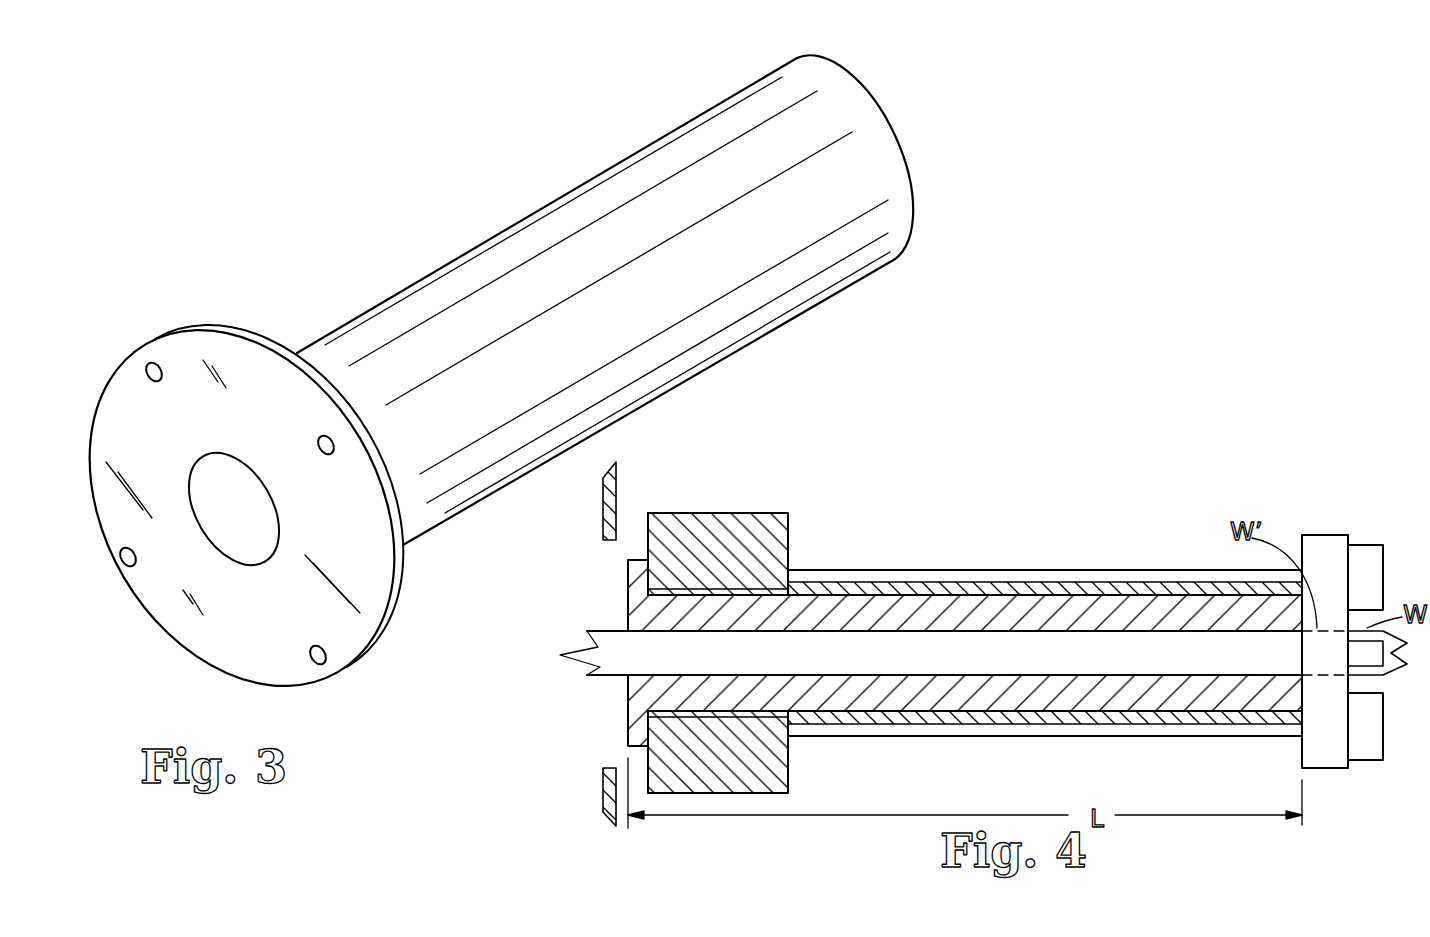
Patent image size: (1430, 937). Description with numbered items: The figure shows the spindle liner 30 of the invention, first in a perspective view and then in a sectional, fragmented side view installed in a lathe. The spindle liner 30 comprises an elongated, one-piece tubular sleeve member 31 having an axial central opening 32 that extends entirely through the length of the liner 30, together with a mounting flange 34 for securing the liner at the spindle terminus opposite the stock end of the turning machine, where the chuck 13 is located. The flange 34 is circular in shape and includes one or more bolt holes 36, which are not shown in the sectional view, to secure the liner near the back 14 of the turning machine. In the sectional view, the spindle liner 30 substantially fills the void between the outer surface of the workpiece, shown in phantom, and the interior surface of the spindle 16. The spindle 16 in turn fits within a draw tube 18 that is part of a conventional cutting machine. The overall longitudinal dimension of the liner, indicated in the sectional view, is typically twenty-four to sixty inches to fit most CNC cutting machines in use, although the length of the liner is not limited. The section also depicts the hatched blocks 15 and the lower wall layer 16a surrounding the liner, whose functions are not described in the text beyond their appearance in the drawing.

In FIG. 4, the chuck 13 is at (1325, 768).
In FIG. 4, the back of the turning machine 14 is at (618, 497).
In FIG. 4, the clamp block 15 is at (688, 513).
In FIG. 4, the spindle 16 is at (1007, 580).
In FIG. 4, the inner liner layer 16a is at (900, 703).
In FIG. 4, the draw tube 18 is at (925, 570).
In FIG. 3, the spindle liner 30 is at (740, 371).
In FIG. 4, the spindle liner 30 is at (1088, 588).
In FIG. 3, the tubular sleeve member 31 is at (683, 130).
In FIG. 3, the axial central opening 32 is at (223, 517).
In FIG. 4, the axial central opening 32 is at (628, 655).
In FIG. 3, the mounting flange 34 is at (183, 357).
In FIG. 4, the mounting flange 34 is at (628, 592).
In FIG. 3, the bolt holes 36 is at (313, 437).